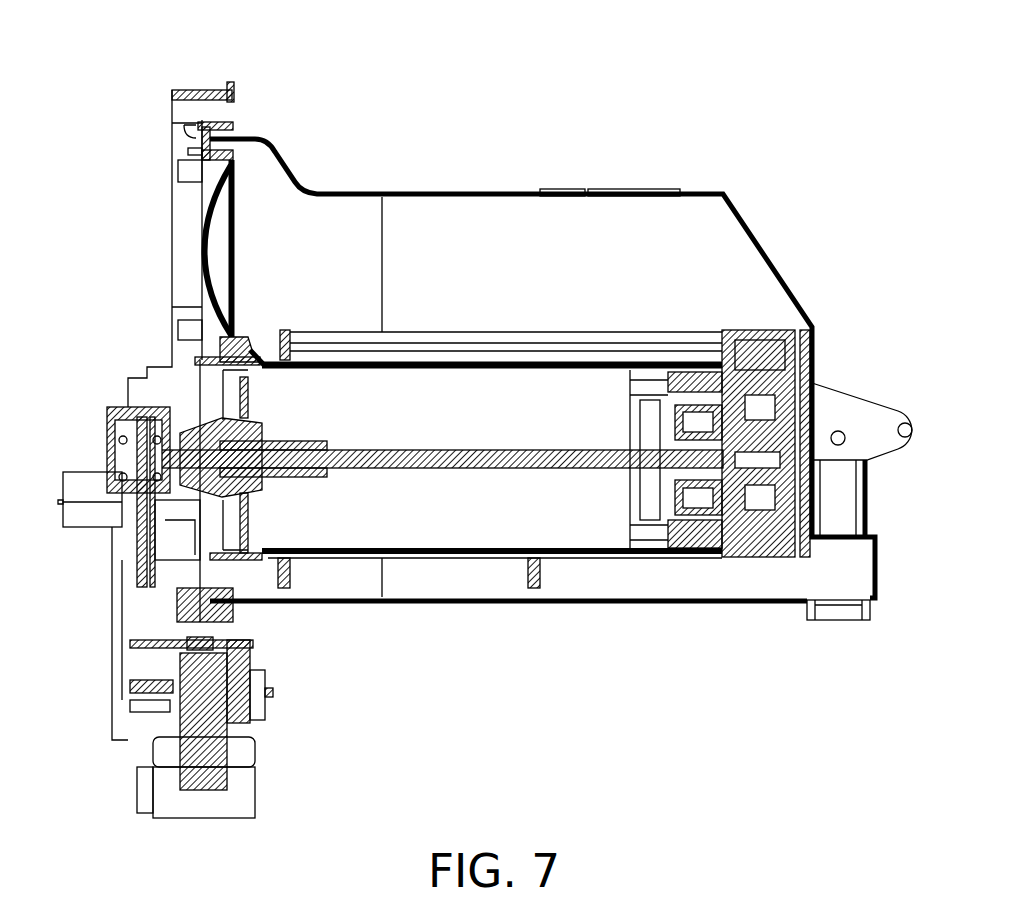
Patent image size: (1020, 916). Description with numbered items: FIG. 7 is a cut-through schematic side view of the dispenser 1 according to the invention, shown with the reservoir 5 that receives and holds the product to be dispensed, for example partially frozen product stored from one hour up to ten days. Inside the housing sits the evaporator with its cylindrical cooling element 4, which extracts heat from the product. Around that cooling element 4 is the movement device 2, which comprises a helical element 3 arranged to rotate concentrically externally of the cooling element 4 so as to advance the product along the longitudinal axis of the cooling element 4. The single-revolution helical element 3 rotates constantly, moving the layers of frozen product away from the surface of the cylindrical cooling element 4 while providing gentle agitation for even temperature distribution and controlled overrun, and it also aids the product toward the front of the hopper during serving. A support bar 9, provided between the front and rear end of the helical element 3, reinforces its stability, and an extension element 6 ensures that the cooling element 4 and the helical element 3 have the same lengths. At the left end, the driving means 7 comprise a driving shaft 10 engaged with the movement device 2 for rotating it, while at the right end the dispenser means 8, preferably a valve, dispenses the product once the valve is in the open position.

The dispenser 1 is at (306, 100).
The movement device 2 is at (742, 332).
The helical element 3 is at (528, 583).
The cylindrical cooling element 4 is at (478, 395).
The reservoir 5 is at (440, 193).
The extension element 6 is at (768, 345).
The driving means 7 is at (203, 782).
The dispenser means 8 is at (890, 554).
The bar 9 is at (568, 343).
The shaft 10 is at (137, 463).